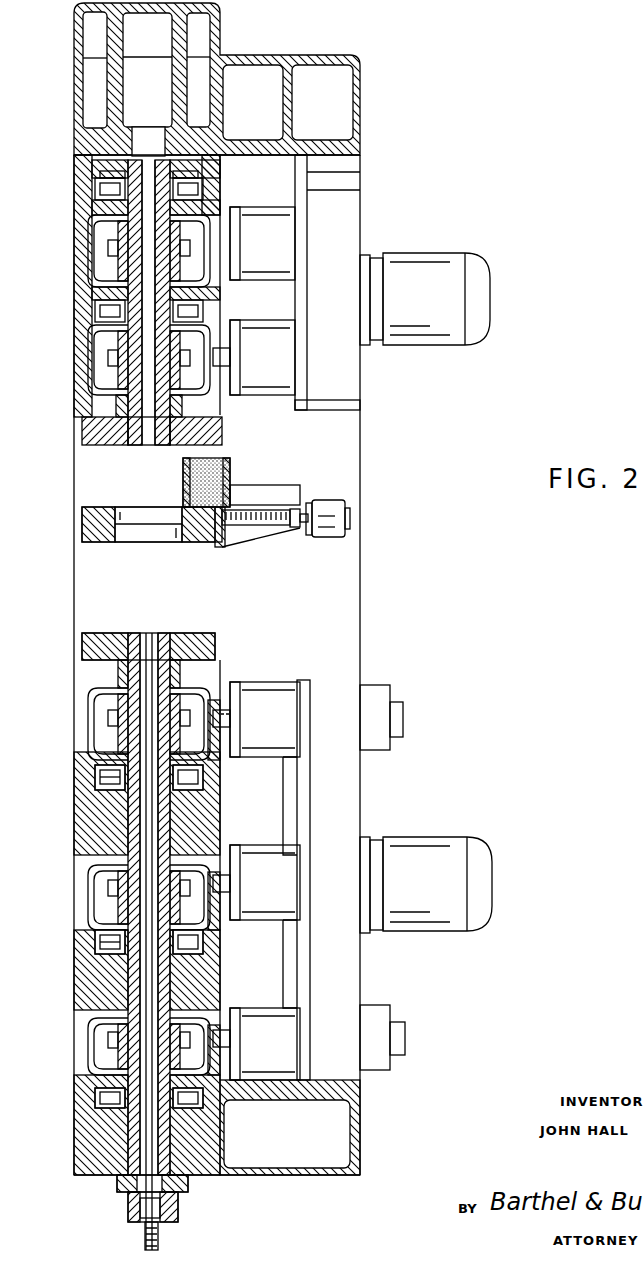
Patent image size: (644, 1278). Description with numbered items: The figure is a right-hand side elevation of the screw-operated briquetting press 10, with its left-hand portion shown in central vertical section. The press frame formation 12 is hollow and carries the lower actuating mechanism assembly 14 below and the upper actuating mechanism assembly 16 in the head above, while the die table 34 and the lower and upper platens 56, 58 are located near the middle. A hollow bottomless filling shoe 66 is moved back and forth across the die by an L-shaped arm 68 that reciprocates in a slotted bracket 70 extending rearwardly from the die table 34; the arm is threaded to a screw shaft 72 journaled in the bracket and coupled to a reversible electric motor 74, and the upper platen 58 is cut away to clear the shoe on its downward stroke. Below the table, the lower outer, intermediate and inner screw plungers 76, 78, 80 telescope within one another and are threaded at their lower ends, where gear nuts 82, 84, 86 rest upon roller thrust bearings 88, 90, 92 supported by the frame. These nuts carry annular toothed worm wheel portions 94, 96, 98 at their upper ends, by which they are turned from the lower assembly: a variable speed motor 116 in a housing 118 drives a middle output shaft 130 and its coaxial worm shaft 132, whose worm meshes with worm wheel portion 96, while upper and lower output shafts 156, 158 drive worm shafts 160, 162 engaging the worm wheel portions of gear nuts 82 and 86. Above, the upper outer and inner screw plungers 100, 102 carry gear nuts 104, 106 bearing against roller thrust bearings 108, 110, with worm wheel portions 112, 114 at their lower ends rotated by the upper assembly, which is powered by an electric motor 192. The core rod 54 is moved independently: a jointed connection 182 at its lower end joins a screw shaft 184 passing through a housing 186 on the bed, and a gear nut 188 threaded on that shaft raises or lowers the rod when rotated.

The screw-operated briquetting press 10 is at (368, 84).
The press frame formation 12 is at (364, 450).
The lower actuating mechanism assembly 14 is at (367, 835).
The upper actuating mechanism assembly 16 is at (367, 254).
The die table 34 is at (82, 532).
The core rod 54 is at (175, 1143).
The lower platen 56 is at (82, 652).
The upper platen 58 is at (82, 436).
The filling shoe 66 is at (232, 473).
The L-shaped arm 68 is at (272, 496).
The slotted bracket 70 is at (255, 540).
The screw shaft 72 is at (290, 530).
The reversible electric motor 74 is at (332, 539).
The lower outer screw plunger 76 is at (128, 812).
The lower intermediate screw plunger 78 is at (147, 970).
The lower inner screw plunger 80 is at (146, 1136).
The gear nut 82 is at (95, 739).
The gear nut 84 is at (90, 906).
The gear nut 86 is at (95, 1059).
The roller thrust bearing 88 is at (95, 778).
The roller thrust bearing 90 is at (95, 943).
The roller thrust bearing 92 is at (100, 1099).
The worm wheel portion 94 is at (110, 716).
The worm wheel portion 96 is at (112, 881).
The worm wheel portion 98 is at (112, 1041).
The upper outer screw plunger 100 is at (95, 291).
The upper inner screw plunger 102 is at (118, 164).
The gear nut 104 is at (95, 341).
The gear nut 106 is at (105, 226).
The roller thrust bearing 108 is at (95, 305).
The roller thrust bearing 110 is at (100, 187).
The worm wheel portion 112 is at (112, 365).
The worm wheel portion 114 is at (112, 249).
The variable speed motor 116 is at (446, 846).
The motor housing 118 is at (365, 934).
The middle output shaft 130 is at (236, 890).
The worm shaft 132 is at (224, 878).
The upper output shaft 156 is at (240, 720).
The lower output shaft 158 is at (240, 1045).
The worm shaft 160 is at (218, 708).
The worm shaft 162 is at (224, 1032).
The jointed connection 182 is at (160, 1170).
The screw shaft 184 is at (158, 1233).
The housing 186 is at (140, 1197).
The gear nut 188 is at (176, 1192).
The electric motor 192 is at (448, 254).